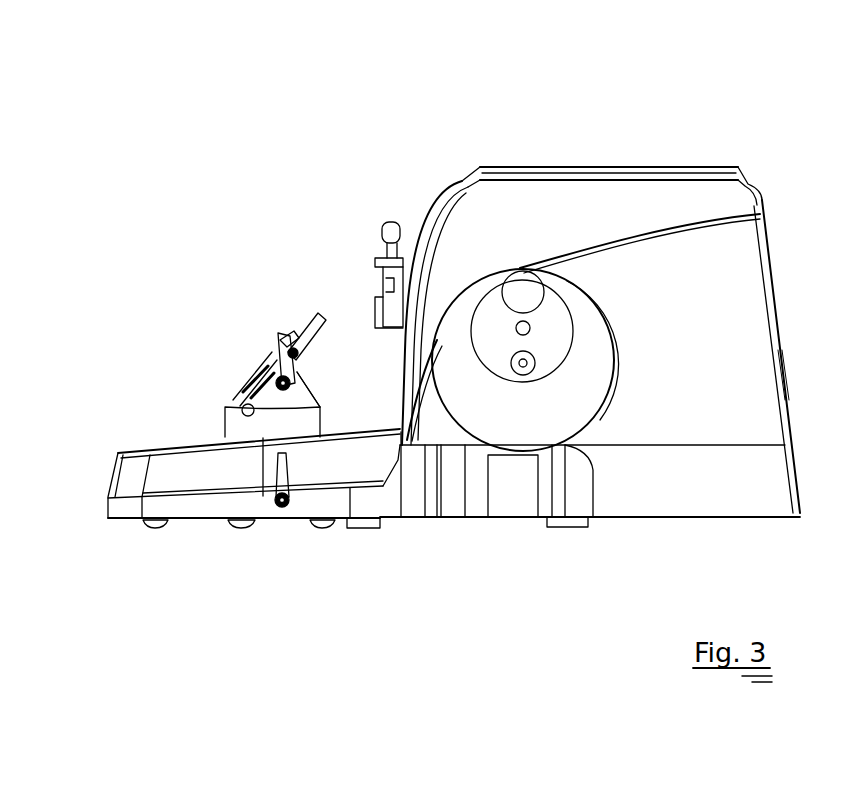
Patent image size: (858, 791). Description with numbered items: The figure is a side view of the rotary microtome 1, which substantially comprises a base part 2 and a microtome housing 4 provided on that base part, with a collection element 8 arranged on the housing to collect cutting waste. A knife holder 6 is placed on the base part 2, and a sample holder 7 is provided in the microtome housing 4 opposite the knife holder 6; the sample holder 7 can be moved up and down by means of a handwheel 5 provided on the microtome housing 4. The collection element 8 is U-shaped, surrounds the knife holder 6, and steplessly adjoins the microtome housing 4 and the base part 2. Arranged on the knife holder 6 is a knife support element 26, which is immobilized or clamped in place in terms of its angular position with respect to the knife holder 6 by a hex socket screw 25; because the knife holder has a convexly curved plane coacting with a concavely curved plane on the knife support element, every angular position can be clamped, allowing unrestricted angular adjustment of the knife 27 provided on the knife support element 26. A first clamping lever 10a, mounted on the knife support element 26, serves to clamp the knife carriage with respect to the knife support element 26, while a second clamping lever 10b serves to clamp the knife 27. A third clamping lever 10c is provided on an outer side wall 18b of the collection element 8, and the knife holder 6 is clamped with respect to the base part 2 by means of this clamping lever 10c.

The rotary microtome 1 is at (652, 130).
The base part 2 is at (730, 492).
The microtome housing 4 is at (713, 294).
The handwheel 5 is at (531, 432).
The knife holder 6 is at (237, 424).
The sample holder 7 is at (377, 278).
The collection element 8 is at (142, 452).
The first clamping lever 10a is at (293, 364).
The second clamping lever 10b is at (328, 327).
The third clamping lever 10c is at (287, 505).
The outer side wall 18b is at (216, 471).
The hex socket screw 25 is at (238, 407).
The knife support element 26 is at (305, 398).
The knife 27 is at (291, 322).